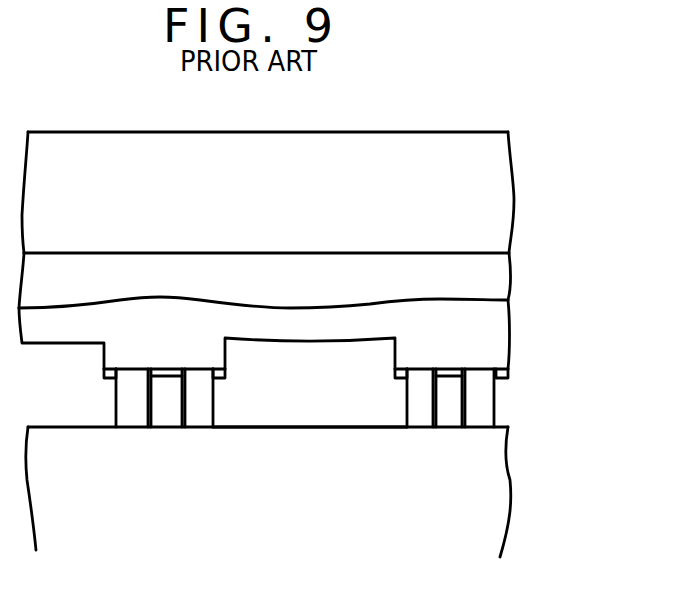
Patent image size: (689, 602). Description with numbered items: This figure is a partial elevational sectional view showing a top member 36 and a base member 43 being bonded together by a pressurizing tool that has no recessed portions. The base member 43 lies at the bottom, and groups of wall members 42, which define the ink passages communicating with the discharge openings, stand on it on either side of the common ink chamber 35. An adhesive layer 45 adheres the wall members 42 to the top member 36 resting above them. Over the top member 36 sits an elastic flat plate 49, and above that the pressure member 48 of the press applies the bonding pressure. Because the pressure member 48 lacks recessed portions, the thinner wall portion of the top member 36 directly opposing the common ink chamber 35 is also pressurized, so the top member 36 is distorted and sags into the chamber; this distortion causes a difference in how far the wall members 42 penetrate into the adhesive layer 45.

The pressure member 48 is at (482, 202).
The elastic flat plate 49 is at (492, 280).
The top member 36 is at (477, 343).
The adhesive layer 45 is at (498, 375).
The wall members 42 is at (477, 413).
The common ink chamber 35 is at (315, 380).
The base member 43 is at (482, 477).